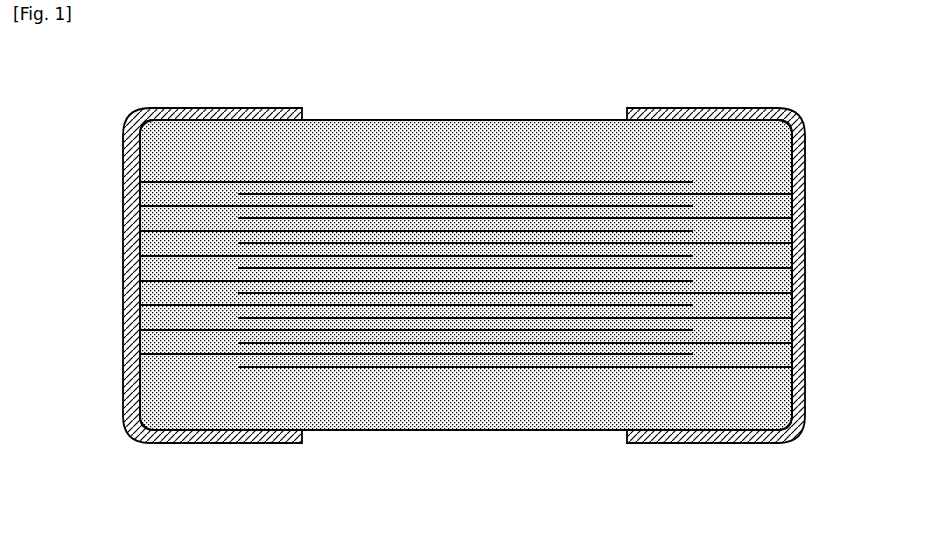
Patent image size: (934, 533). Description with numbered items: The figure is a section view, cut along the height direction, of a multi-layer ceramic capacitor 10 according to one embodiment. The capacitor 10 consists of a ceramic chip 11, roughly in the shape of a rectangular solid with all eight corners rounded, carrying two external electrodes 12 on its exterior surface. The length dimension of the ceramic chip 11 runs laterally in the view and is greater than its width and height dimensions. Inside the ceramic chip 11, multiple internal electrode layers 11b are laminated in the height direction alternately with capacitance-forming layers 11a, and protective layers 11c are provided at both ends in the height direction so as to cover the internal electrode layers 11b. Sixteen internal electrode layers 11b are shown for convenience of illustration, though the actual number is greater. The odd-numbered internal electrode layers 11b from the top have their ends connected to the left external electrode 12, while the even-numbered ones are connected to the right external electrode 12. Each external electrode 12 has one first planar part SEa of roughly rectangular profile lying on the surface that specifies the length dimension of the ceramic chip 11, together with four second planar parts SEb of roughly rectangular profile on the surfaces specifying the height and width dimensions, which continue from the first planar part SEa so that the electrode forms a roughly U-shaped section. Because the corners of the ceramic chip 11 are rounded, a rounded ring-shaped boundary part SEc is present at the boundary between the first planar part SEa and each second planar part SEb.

The multi-layer ceramic capacitor 10 is at (119, 172).
The ceramic chip 11 is at (341, 120).
The capacitance-forming layers 11a is at (388, 182).
The internal electrode layers 11b is at (440, 192).
The protective layers 11c is at (496, 146).
The external electrodes 12 is at (123, 218).
The first planar part SEa is at (817, 420).
The second planar parts SEb is at (302, 92).
The boundary part SEc is at (165, 92).